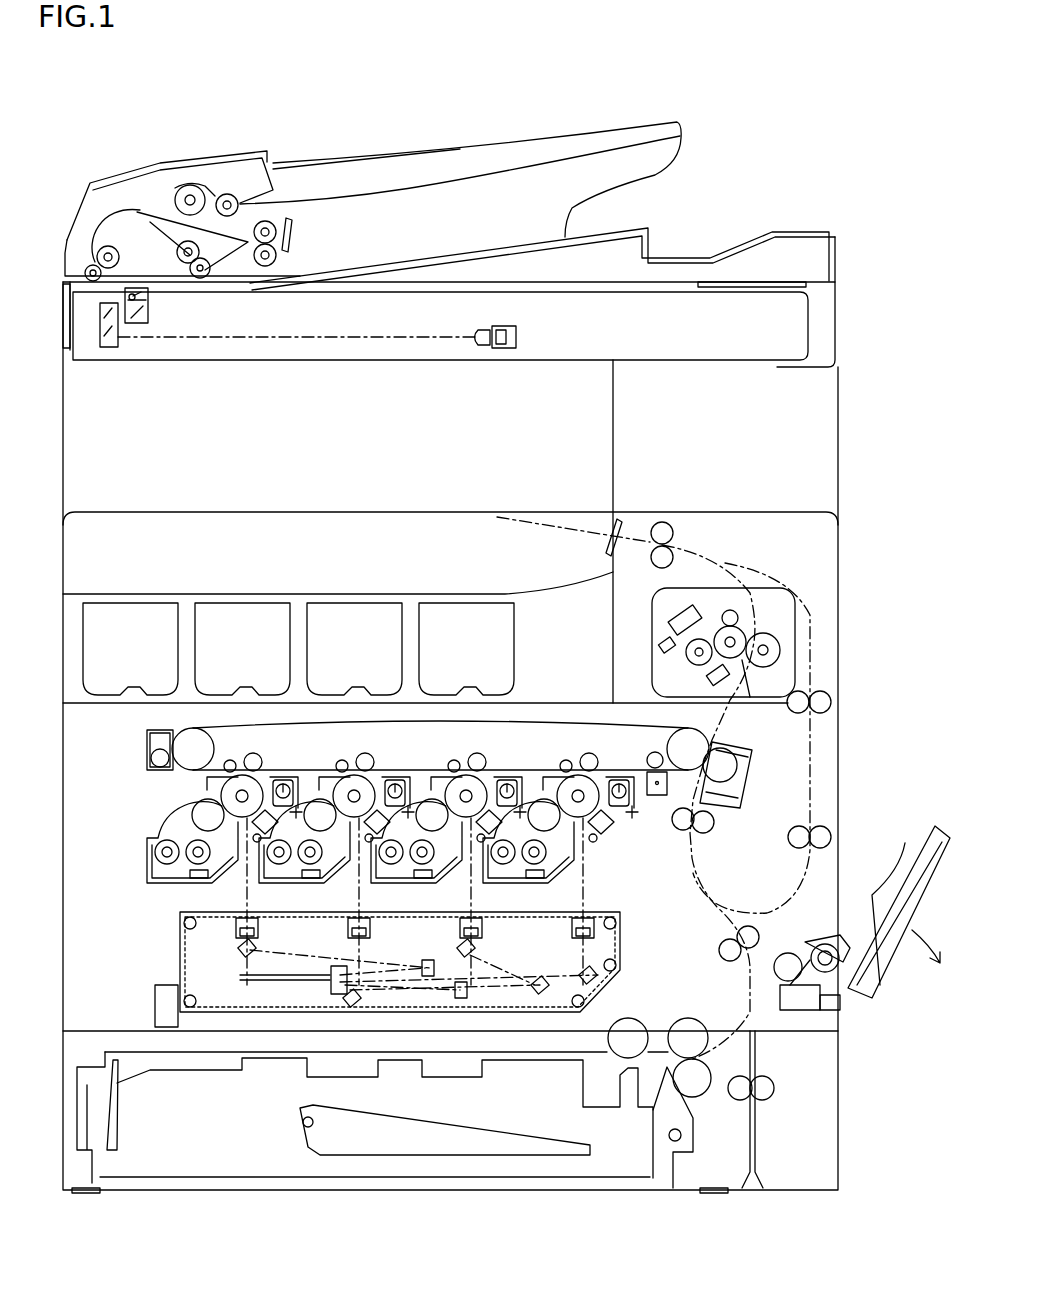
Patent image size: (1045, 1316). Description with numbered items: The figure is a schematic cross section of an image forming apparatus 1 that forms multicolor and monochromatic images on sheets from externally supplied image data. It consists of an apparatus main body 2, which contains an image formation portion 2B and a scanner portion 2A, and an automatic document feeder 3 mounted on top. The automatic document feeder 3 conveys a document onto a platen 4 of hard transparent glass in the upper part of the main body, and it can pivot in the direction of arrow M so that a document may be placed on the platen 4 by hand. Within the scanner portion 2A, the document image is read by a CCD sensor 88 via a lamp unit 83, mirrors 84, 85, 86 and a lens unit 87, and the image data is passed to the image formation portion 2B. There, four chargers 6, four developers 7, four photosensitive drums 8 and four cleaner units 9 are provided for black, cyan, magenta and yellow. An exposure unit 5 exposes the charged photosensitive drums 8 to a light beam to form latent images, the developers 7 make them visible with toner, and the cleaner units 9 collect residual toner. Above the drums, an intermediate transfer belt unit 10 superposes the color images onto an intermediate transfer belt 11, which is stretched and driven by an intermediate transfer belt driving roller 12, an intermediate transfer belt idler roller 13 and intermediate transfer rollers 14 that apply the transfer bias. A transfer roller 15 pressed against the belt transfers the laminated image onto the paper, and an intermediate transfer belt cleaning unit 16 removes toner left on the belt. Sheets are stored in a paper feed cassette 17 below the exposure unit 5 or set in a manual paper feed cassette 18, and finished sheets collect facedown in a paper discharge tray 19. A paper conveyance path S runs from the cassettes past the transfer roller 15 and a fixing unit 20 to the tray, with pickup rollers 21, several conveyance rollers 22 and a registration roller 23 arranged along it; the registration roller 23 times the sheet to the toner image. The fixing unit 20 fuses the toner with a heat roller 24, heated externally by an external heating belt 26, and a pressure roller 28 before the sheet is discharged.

The image forming apparatus 1 is at (840, 206).
The apparatus main body 2 is at (61, 568).
The scanner portion 2A is at (822, 326).
The image formation portion 2B is at (851, 531).
The automatic document feeder 3 is at (185, 146).
The platen 4 is at (532, 244).
The exposure unit 5 is at (622, 945).
The charger 6 is at (245, 860).
The developer 7 is at (200, 810).
The photosensitive drum 8 is at (243, 775).
The cleaner unit 9 is at (290, 779).
The intermediate transfer belt unit 10 is at (538, 716).
The intermediate transfer belt 11 is at (585, 724).
The intermediate transfer belt driving roller 12 is at (703, 740).
The intermediate transfer belt idler roller 13 is at (200, 738).
The intermediate transfer roller 14 is at (262, 764).
The transfer roller 15 is at (730, 765).
The intermediate transfer belt cleaning unit 16 is at (158, 730).
The paper feed cassette 17 is at (393, 1128).
The manual paper feed cassette 18 is at (912, 835).
The paper discharge tray 19 is at (275, 594).
The fixing unit 20 is at (797, 615).
The pickup roller 21 is at (826, 942).
The conveyance roller 22 is at (667, 523).
The registration roller 23 is at (714, 822).
The heat roller 24 is at (742, 632).
The external heating belt 26 is at (707, 630).
The pressure roller 28 is at (782, 650).
The lamp unit 83 is at (66, 290).
The mirror 84 is at (148, 310).
The mirror 85 is at (104, 316).
The mirror 86 is at (118, 335).
The lens unit 87 is at (478, 340).
The CCD sensor 88 is at (515, 345).
The pivot direction arrow M is at (383, 92).
The paper conveyance path S is at (690, 880).